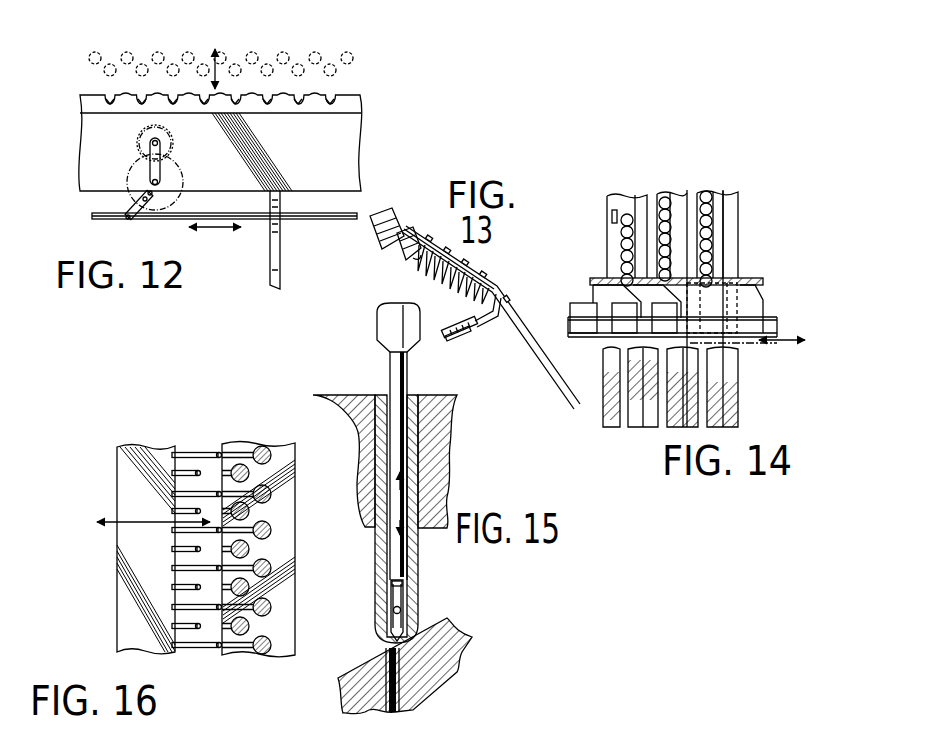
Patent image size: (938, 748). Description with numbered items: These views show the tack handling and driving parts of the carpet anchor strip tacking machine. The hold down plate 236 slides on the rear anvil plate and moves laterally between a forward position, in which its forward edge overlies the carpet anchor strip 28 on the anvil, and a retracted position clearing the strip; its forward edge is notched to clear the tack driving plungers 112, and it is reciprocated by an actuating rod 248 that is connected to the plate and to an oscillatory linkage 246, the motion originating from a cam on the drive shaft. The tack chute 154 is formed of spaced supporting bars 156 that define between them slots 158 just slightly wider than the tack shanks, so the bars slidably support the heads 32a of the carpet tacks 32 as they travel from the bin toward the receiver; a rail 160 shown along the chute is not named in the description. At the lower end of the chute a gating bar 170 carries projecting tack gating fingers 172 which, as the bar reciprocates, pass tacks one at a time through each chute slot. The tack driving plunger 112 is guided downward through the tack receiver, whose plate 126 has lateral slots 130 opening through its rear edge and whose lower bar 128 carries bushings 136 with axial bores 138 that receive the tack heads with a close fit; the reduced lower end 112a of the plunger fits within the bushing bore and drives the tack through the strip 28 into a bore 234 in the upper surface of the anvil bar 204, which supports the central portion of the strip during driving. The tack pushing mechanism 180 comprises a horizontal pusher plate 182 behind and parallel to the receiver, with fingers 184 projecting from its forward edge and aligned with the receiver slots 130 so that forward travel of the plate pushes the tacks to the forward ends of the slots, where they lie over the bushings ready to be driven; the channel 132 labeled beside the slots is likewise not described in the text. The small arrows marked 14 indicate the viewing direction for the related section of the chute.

In FIG. 12, the bushings 136 is at (313, 57).
In FIG. 15, the bushings 136 is at (382, 562).
In FIG. 12, the hold down plate 236 is at (350, 138).
In FIG. 12, the actuating rod 248 is at (301, 218).
In FIG. 12, the oscillatory linkage 246 is at (280, 290).
In FIG. 13, the section line for FIG. 14 view 14 is at (403, 200).
In FIG. 14, the section line for FIG. 14 view 14 is at (571, 401).
In FIG. 13, the supporting bars 156 is at (407, 252).
In FIG. 14, the supporting bars 156 is at (610, 222).
In FIG. 13, the carpet tacks 32 is at (418, 262).
In FIG. 14, the carpet tacks 32 is at (712, 282).
In FIG. 15, the carpet tacks 32 is at (401, 610).
In FIG. 16, the carpet tacks 32 is at (217, 608).
In FIG. 13, the tack chute 154 is at (372, 276).
In FIG. 13, the guide rail 160 is at (521, 313).
In FIG. 13, the tack gating fingers 172 is at (461, 338).
In FIG. 14, the tack gating fingers 172 is at (593, 305).
In FIG. 13, the gating bar 170 is at (461, 341).
In FIG. 14, the gating bar 170 is at (608, 335).
In FIG. 15, the tack driving plungers 112 is at (386, 357).
In FIG. 15, the axial bores 138 is at (400, 458).
In FIG. 15, the lower bar 128 is at (432, 503).
In FIG. 15, the lower ends of the tack driving plungers 112a is at (398, 573).
In FIG. 15, the heads of the carpet tacks 32a is at (389, 588).
In FIG. 15, the carpet anchor strip 28 is at (454, 628).
In FIG. 15, the anvil bar 204 is at (444, 667).
In FIG. 15, the bores 234 is at (401, 697).
In FIG. 16, the plate 126 is at (280, 533).
In FIG. 16, the tack pushing mechanism 180 is at (114, 471).
In FIG. 16, the pusher plate 182 is at (137, 557).
In FIG. 16, the fingers 184 is at (190, 473).
In FIG. 16, the ball channel 132 is at (253, 477).
In FIG. 16, the slots 130 is at (220, 608).
In FIG. 14, the slots 158 is at (633, 225).